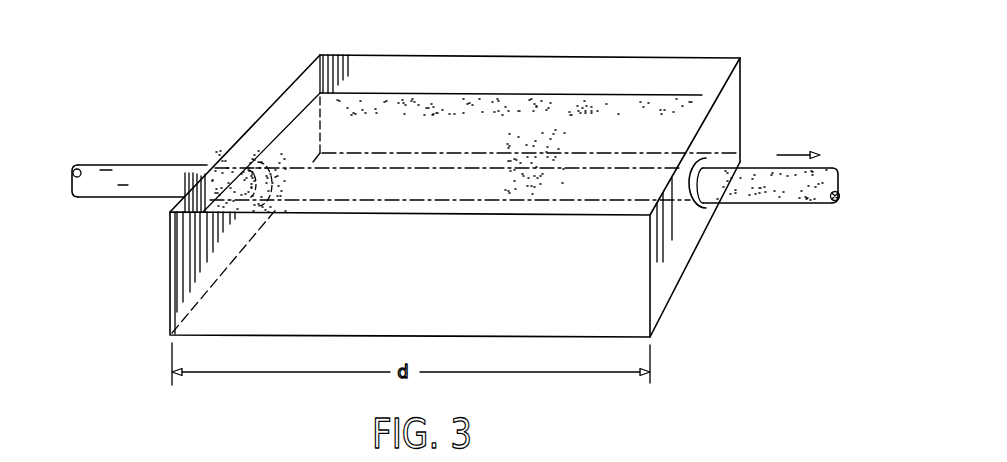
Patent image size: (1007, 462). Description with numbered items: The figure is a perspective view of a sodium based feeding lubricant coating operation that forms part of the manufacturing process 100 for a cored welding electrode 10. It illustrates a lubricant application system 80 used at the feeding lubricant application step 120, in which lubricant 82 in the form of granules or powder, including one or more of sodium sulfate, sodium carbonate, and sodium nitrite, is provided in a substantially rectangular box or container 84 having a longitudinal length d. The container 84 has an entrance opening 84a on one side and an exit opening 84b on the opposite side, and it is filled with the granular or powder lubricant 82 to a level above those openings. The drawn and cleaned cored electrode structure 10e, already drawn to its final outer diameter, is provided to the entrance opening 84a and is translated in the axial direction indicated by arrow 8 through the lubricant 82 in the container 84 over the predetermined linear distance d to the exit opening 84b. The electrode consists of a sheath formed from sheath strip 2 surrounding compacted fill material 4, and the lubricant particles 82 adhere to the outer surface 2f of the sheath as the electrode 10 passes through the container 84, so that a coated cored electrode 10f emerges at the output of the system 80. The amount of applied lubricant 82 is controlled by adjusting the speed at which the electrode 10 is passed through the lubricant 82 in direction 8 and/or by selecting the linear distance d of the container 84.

The manufacturing process 100 is at (248, 52).
The feeding lubricant application step 120 is at (307, 53).
The lubricant application system 80 is at (422, 175).
The lubricant 82 is at (473, 105).
The container 84 is at (168, 290).
The entrance opening 84a is at (257, 155).
The exit opening 84b is at (698, 150).
The cored electrode 10 is at (455, 208).
The drawn and cleaned cored electrode structure 10e is at (138, 178).
The coated cored electrode 10f is at (768, 226).
The sheath strip 2 is at (98, 188).
The outer surface 2f is at (143, 188).
The fill material 4 is at (839, 232).
The axial direction arrow 8 is at (787, 153).